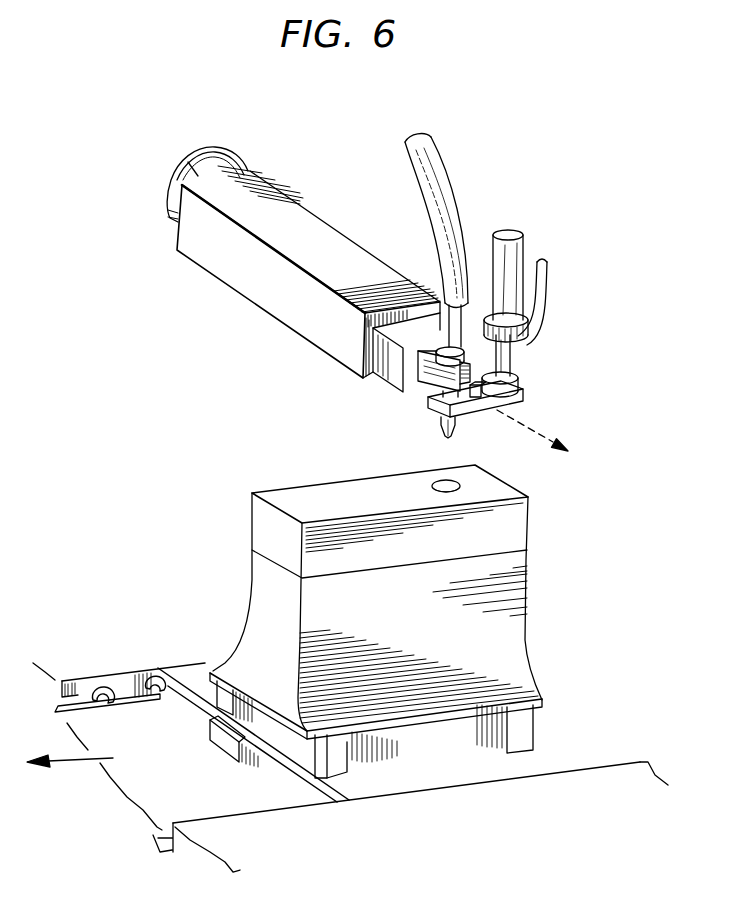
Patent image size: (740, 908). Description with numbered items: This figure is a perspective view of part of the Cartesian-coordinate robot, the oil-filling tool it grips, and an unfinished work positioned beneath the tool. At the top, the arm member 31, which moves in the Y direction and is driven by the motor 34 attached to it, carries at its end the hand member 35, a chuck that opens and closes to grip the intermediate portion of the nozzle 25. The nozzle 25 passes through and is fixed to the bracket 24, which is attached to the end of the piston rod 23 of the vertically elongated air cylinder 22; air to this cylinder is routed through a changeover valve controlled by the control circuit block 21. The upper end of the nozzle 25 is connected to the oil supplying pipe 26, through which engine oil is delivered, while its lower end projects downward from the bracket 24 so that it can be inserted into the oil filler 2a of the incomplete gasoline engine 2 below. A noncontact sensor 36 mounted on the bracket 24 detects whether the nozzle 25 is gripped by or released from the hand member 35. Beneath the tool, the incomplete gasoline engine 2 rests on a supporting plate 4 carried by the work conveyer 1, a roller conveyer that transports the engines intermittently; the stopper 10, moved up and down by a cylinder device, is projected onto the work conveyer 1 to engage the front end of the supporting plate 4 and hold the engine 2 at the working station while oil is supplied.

The work conveyer 1 is at (117, 688).
The incomplete gasoline engine 2 is at (527, 587).
The oil filler 2a is at (432, 483).
The supporting plate 4 is at (423, 780).
The stopper 10 is at (227, 738).
The control circuit block 21 is at (548, 447).
The air cylinder 22 is at (525, 246).
The piston rod 23 is at (508, 365).
The bracket 24 is at (493, 403).
The nozzle 25 is at (443, 429).
The oil supplying pipe 26 is at (462, 193).
The arm member 31 is at (252, 297).
The motor 34 is at (222, 152).
The hand member 35 is at (430, 378).
The noncontact sensor 36 is at (476, 398).